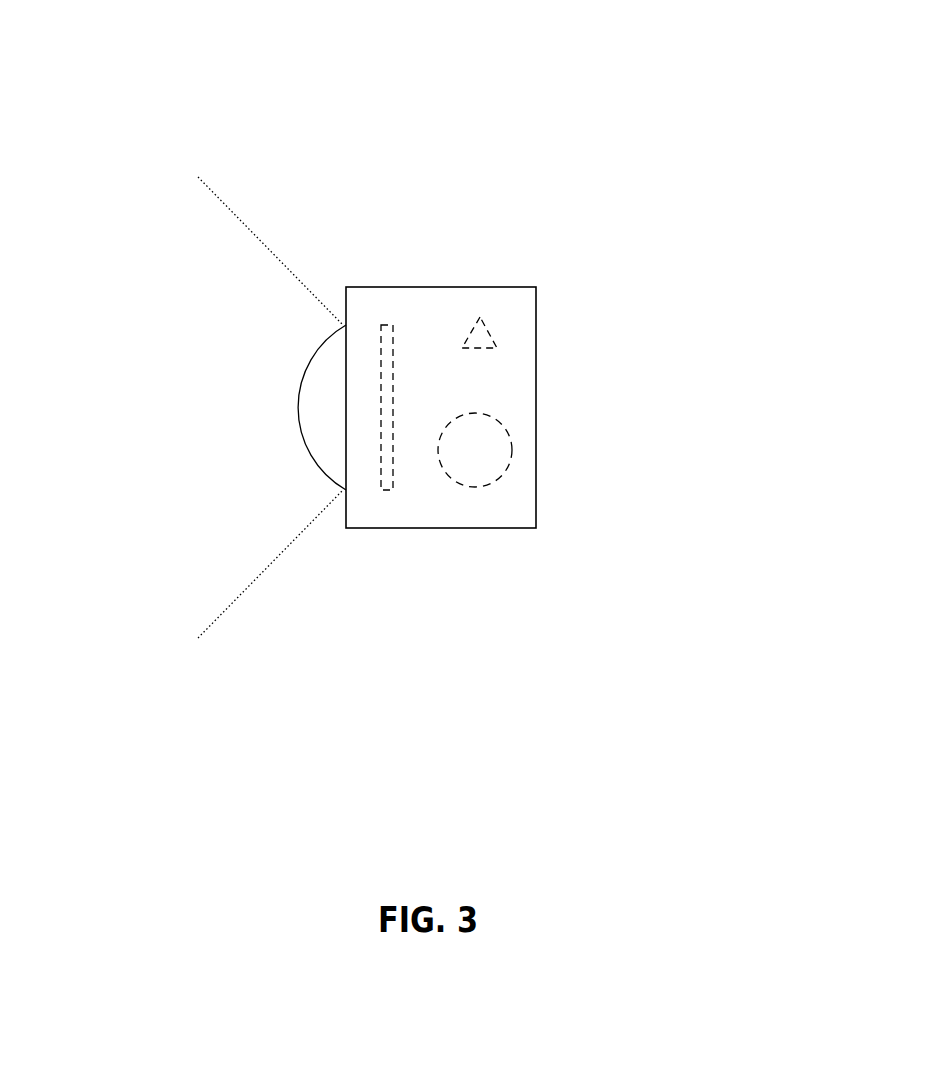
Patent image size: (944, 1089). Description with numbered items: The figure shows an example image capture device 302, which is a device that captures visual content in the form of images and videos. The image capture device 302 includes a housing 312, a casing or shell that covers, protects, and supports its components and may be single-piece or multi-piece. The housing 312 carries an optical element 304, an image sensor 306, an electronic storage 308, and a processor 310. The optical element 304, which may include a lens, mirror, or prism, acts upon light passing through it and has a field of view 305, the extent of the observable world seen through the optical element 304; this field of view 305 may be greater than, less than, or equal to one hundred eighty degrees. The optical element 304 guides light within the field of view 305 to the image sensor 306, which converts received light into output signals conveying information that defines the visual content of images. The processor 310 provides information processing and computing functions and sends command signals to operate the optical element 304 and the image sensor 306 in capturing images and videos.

The image capture device 302 is at (503, 148).
The optical element 304 is at (322, 478).
The field of view 305 is at (276, 278).
The image sensor 306 is at (386, 325).
The electronic storage 308 is at (497, 348).
The processor 310 is at (512, 450).
The housing 312 is at (452, 528).